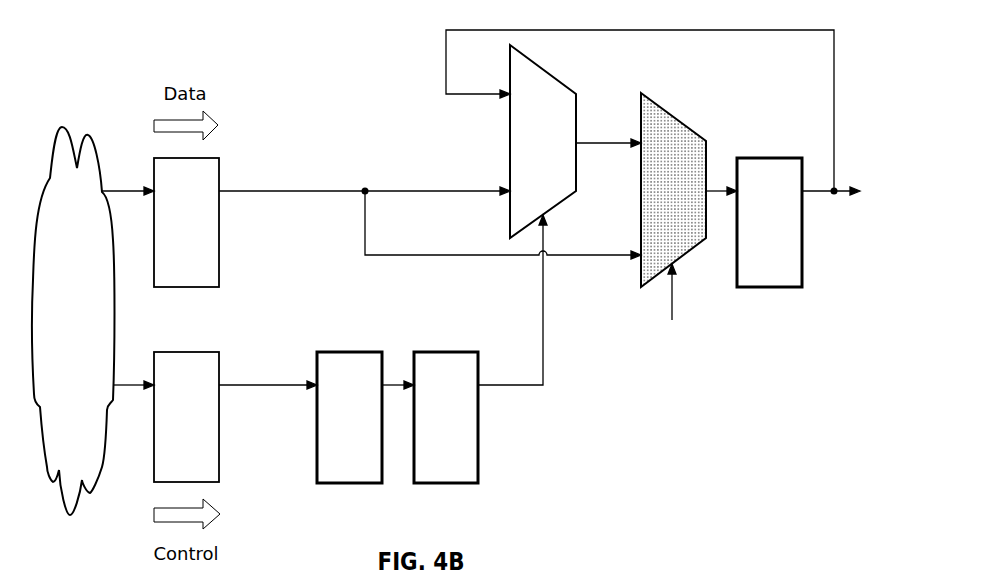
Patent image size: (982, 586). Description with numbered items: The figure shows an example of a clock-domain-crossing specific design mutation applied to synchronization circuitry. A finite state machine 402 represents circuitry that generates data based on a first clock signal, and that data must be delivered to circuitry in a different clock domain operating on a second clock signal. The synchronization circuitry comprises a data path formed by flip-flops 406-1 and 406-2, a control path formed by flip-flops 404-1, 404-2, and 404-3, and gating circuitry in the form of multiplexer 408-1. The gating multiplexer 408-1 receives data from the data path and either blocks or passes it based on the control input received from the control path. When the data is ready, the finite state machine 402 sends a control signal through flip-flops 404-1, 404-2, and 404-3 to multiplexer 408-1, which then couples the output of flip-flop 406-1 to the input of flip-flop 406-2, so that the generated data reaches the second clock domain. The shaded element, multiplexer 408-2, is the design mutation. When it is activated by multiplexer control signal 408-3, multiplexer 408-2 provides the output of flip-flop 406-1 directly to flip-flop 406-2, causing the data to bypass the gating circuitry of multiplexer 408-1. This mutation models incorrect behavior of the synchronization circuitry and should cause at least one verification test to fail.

The finite state machine (FSM) 402 is at (73, 321).
The flip-flop 404-1 is at (186, 417).
The flip-flop 404-2 is at (349, 417).
The flip-flop 404-3 is at (446, 417).
The flip-flop 406-1 is at (186, 222).
The flip-flop 406-2 is at (769, 222).
The multiplexer 408-1 is at (543, 141).
The multiplexer 408-2 is at (673, 190).
The multiplexer control signal 408-3 is at (672, 318).